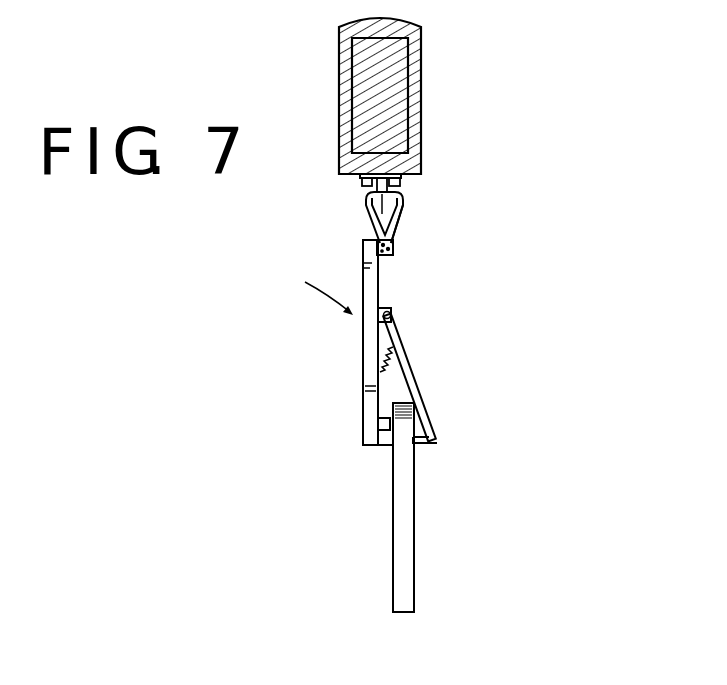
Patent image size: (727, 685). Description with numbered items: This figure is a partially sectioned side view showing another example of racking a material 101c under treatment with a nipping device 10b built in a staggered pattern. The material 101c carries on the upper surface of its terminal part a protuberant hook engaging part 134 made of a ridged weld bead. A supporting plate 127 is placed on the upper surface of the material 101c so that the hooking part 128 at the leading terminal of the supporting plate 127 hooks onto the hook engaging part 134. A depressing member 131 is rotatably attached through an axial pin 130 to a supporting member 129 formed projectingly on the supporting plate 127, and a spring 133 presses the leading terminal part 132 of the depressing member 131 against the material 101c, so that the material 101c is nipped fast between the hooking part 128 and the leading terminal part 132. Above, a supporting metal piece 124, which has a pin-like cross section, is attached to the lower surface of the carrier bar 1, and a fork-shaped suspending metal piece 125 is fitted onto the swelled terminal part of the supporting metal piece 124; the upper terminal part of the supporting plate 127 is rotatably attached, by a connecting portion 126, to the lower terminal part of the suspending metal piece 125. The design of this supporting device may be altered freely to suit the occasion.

The carrier bar 1 is at (340, 78).
The operating unit 10b is at (305, 290).
The supporting metal piece 124 is at (388, 213).
The suspending metal piece 125 is at (367, 210).
The connecting block 126 is at (393, 247).
The supporting plate 127 is at (365, 337).
The hooking part 128 is at (384, 447).
The supporting member 129 is at (388, 307).
The axial pin 130 is at (392, 314).
The depressing member 131 is at (421, 383).
The leading terminal part 132 is at (428, 445).
The spring 133 is at (402, 345).
The hook engaging part 134 is at (388, 425).
The material under treatment 101c is at (414, 568).